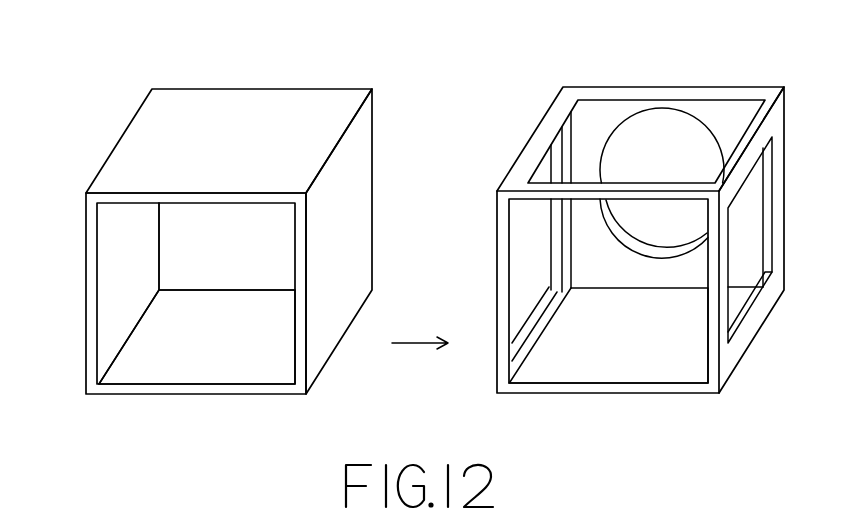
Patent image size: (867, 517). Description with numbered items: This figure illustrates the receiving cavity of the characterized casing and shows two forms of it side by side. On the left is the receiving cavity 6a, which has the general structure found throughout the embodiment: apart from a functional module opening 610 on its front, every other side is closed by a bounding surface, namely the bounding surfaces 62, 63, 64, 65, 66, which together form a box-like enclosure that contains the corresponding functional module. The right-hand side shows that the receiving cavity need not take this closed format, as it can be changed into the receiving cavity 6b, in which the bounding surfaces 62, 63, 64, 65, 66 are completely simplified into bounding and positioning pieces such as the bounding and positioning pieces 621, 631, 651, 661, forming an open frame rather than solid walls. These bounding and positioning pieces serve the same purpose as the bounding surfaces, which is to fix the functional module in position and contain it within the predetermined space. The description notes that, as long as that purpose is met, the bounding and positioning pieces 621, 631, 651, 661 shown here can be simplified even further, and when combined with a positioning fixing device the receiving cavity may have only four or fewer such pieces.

The receiving cavity 6a is at (128, 130).
The bounding surface 66 is at (258, 107).
The bounding surface 62 is at (355, 183).
The bounding surface 63 is at (275, 252).
The bounding surface 64 is at (159, 357).
The bounding surface 65 is at (125, 273).
The functional module opening 610 is at (97, 222).
The receiving cavity 6b is at (548, 108).
The bounding and positioning piece 661 is at (637, 92).
The bounding and positioning piece 631 is at (720, 128).
The bounding and positioning piece 621 is at (750, 330).
The bounding and positioning piece 651 is at (535, 332).